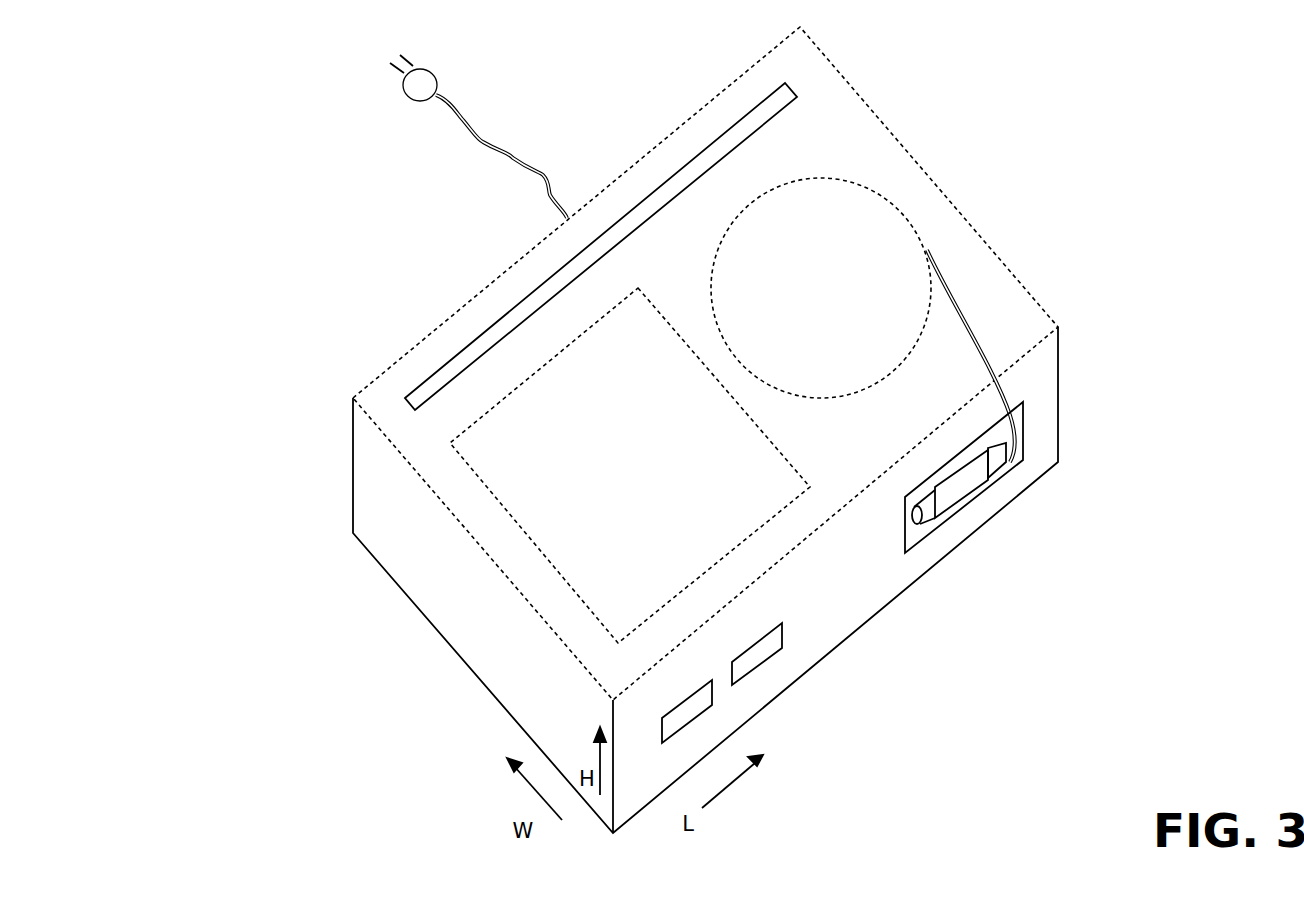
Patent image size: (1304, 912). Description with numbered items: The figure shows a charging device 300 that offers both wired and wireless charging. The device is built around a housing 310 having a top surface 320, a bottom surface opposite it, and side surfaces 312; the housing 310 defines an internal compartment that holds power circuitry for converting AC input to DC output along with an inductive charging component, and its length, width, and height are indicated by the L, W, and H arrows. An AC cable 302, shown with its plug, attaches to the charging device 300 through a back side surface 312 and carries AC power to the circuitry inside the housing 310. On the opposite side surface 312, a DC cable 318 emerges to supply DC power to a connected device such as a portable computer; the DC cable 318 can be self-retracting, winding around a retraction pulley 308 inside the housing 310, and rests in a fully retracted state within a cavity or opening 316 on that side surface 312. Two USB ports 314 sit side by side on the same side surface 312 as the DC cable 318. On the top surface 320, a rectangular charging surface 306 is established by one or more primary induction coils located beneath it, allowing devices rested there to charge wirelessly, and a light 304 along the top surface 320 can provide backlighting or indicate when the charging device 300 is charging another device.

The charging device 300 is at (136, 130).
The AC cable 302 is at (482, 140).
The light 304 is at (785, 82).
The charging surface 306 is at (628, 302).
The retraction pulley 308 is at (758, 197).
The housing 310 is at (937, 182).
The side surface 312 is at (493, 628).
The USB ports 314 is at (690, 692).
The cavity or opening 316 is at (917, 548).
The DC cable 318 is at (913, 495).
The top surface 320 is at (1002, 302).